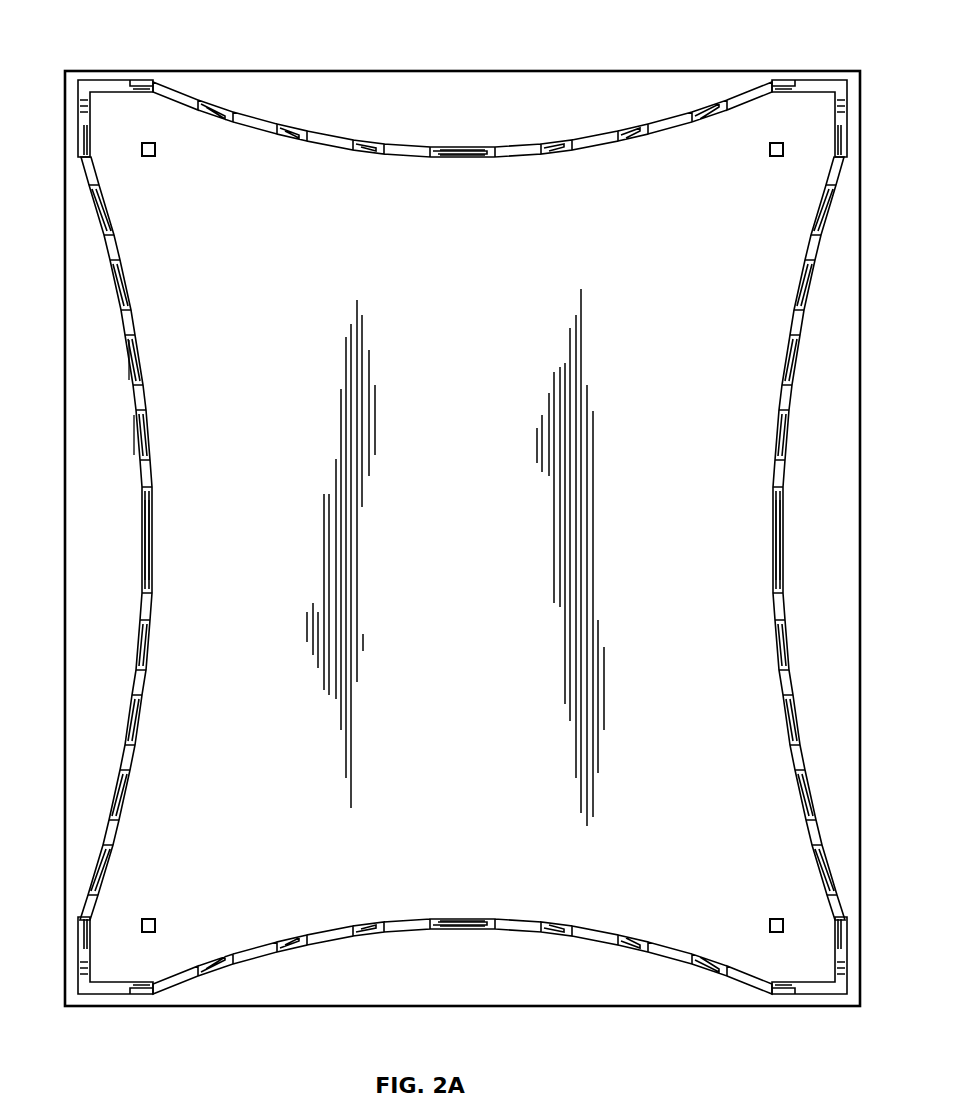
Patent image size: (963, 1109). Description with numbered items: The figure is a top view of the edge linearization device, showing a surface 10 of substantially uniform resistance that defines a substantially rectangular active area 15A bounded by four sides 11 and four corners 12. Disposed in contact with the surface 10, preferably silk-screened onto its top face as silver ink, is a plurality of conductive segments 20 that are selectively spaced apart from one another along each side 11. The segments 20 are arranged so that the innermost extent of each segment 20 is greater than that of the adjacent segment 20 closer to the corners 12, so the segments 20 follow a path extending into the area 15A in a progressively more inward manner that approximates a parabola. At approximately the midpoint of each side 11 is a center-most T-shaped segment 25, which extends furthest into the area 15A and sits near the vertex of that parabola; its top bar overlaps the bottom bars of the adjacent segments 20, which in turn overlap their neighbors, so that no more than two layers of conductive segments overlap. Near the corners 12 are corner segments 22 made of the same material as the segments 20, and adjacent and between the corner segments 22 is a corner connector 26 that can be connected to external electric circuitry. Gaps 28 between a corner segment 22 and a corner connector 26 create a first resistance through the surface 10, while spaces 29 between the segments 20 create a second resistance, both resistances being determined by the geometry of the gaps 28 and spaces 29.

The surface 10 is at (51, 112).
The side 11 is at (449, 119).
The corner 12 is at (66, 66).
The active touch area 15A is at (445, 552).
The conductive segment 20 is at (248, 127).
The corner segment 22 is at (180, 108).
The T-shaped segment 25 is at (460, 160).
The corner connector 26 is at (92, 104).
The gap 28 is at (143, 81).
The space 29 is at (135, 360).